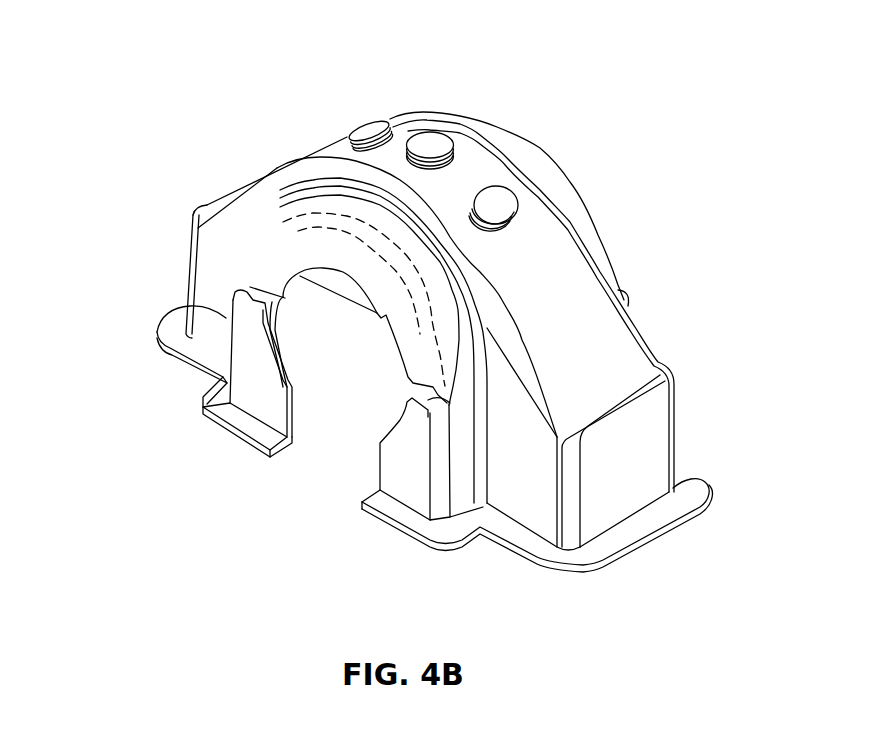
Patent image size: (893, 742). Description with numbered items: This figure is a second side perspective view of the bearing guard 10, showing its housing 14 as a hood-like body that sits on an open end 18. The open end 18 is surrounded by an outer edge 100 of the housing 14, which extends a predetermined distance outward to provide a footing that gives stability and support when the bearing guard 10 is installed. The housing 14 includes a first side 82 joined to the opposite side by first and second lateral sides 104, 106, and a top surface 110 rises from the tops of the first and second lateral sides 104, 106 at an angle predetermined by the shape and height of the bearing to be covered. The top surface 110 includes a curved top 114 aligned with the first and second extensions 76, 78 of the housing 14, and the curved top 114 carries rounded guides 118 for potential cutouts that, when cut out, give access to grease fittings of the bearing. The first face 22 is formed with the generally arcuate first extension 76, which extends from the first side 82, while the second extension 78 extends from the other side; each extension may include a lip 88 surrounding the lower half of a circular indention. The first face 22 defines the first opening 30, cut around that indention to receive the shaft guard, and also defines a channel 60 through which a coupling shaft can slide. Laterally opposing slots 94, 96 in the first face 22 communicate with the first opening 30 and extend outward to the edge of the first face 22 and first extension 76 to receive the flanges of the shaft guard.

The bearing guard 10 is at (140, 137).
The housing 14 is at (623, 380).
The open end 18 is at (658, 542).
The first face 22 is at (280, 253).
The first opening 30 is at (345, 403).
The channel 60 is at (323, 452).
The first extension 76 is at (348, 212).
The second extension 78 is at (572, 195).
The first side 82 is at (210, 243).
The lip 88 is at (233, 357).
The slot 94 is at (249, 308).
The slot 96 is at (416, 405).
The outer edge 100 is at (690, 491).
The first lateral side 104 is at (640, 455).
The second lateral side 106 is at (187, 265).
The top surface 110 is at (557, 288).
The curved top 114 is at (462, 137).
The rounded guides 118 is at (443, 141).